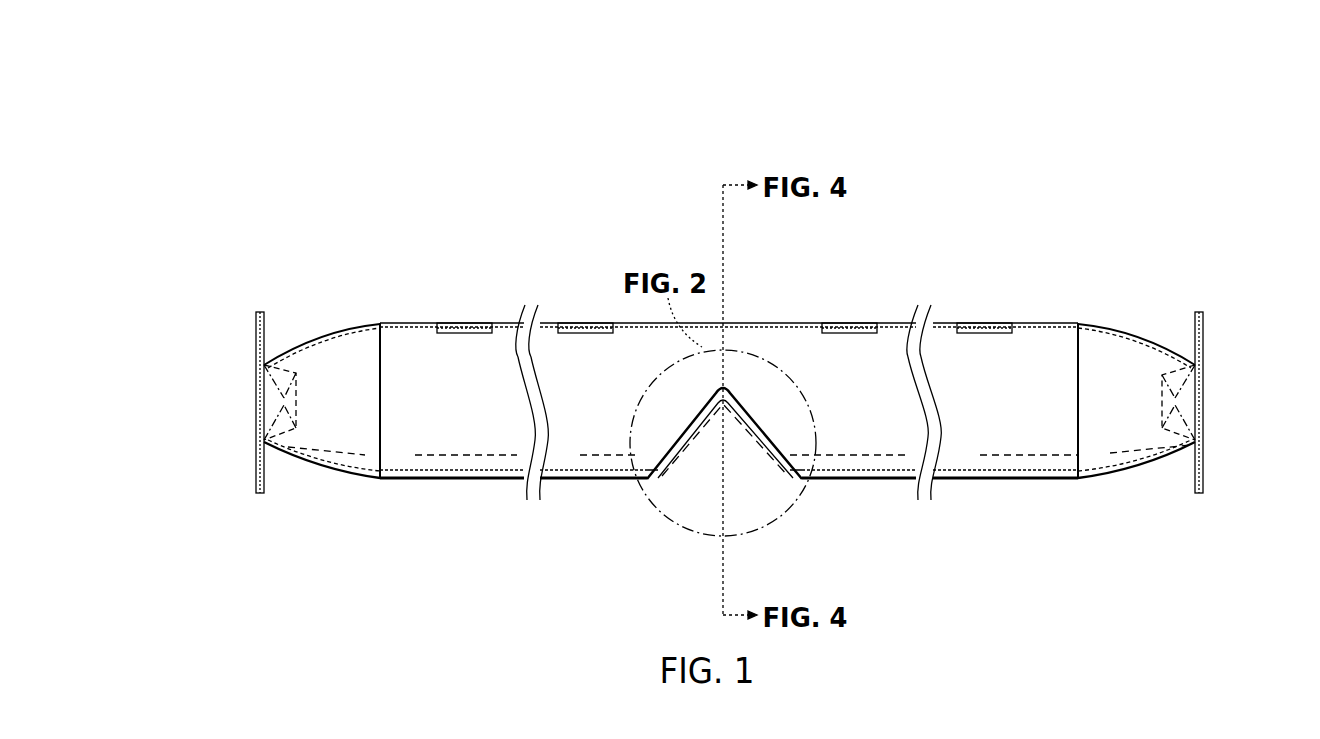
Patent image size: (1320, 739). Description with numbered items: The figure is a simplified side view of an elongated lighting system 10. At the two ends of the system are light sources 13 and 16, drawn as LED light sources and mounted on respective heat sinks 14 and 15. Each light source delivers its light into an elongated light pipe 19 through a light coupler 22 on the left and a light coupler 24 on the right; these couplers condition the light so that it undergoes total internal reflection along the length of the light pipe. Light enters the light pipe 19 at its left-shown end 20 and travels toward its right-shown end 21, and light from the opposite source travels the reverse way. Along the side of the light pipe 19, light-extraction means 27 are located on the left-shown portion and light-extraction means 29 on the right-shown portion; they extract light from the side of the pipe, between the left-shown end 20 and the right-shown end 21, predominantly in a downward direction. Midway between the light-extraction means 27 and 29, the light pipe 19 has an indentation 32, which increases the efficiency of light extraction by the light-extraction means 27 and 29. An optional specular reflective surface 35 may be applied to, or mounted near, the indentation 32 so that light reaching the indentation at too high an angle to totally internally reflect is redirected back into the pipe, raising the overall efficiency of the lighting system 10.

The elongated lighting system 10 is at (196, 160).
The light source 13 is at (265, 362).
The heat sink 14 is at (257, 458).
The heat sink 15 is at (1204, 465).
The light source 16 is at (1181, 351).
The light pipe 19 is at (633, 421).
The left-shown end 20 is at (383, 418).
The right-shown end 21 is at (1076, 428).
The light coupler 22 is at (322, 470).
The light coupler 24 is at (1123, 480).
The light-extraction means 27 is at (465, 320).
The light-extraction means 29 is at (854, 319).
The indentation 32 is at (760, 423).
The specular reflective surface 35 is at (703, 436).